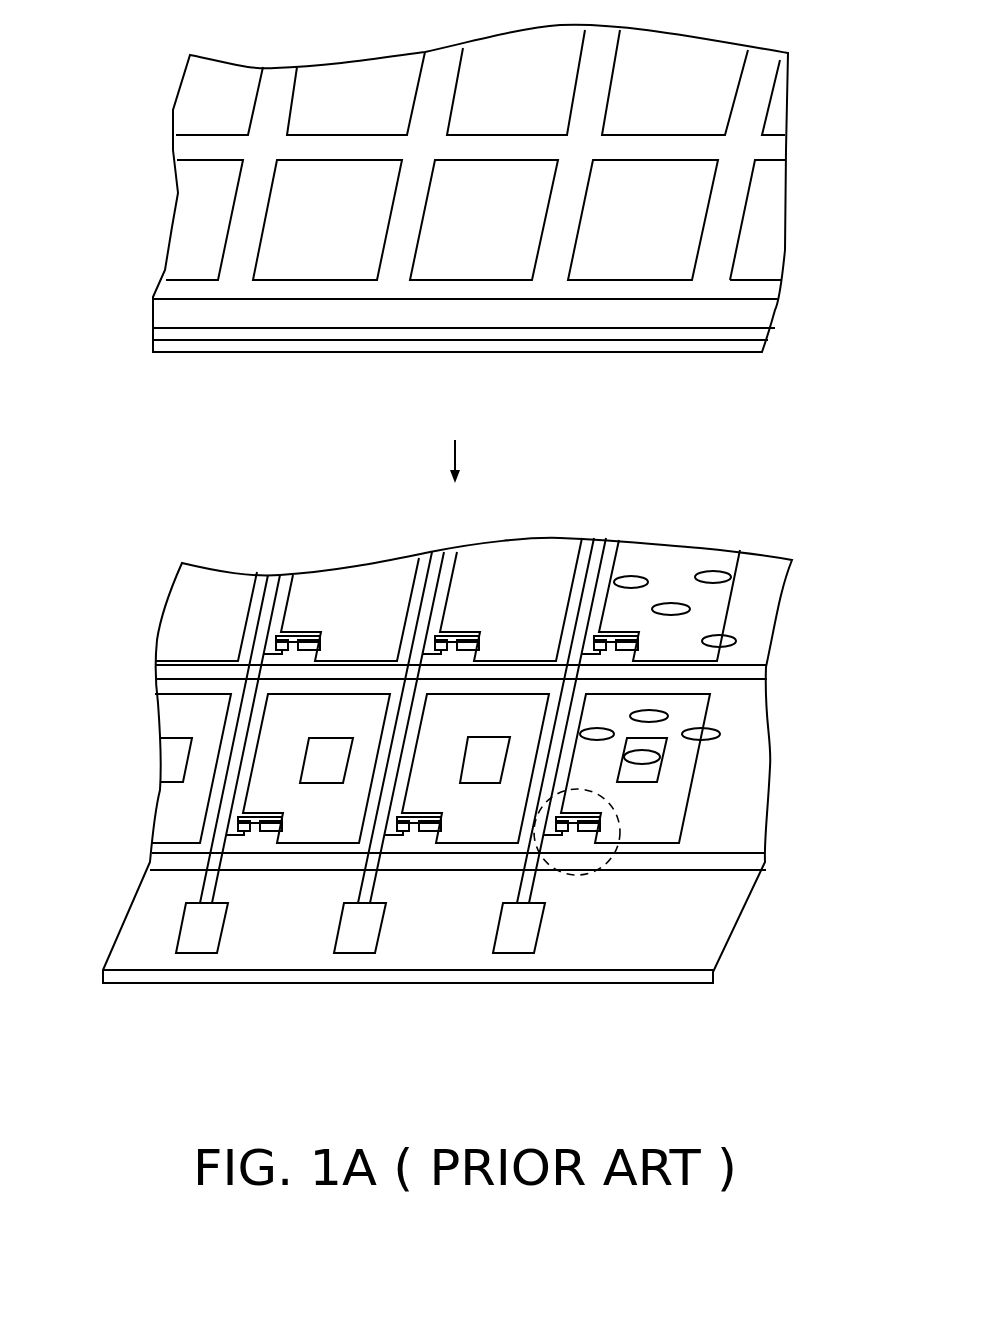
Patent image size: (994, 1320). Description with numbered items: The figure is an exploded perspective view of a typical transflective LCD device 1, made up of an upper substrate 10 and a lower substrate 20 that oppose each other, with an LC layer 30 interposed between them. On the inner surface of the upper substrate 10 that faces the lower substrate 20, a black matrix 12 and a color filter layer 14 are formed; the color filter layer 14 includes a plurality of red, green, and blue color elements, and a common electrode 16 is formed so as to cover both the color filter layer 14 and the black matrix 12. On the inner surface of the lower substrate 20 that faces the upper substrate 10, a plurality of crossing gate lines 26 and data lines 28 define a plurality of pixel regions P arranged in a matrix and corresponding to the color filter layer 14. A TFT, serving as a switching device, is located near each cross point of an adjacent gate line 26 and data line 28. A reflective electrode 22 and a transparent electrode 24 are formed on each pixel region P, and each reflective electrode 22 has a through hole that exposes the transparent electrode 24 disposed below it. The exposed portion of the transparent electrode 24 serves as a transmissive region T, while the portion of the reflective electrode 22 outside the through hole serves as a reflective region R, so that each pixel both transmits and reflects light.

The transflective LCD device 1 is at (500, 814).
The upper substrate 10 is at (718, 313).
The black matrix 12 is at (177, 333).
The color filter layer 14 is at (690, 208).
The common electrode 16 is at (718, 347).
The lower substrate 20 is at (718, 977).
The reflective electrode 22 is at (708, 770).
The transparent electrode 24 is at (670, 730).
The gate line 26 is at (723, 863).
The data line 28 is at (548, 882).
The LC layer 30 is at (703, 633).
The transmissive region T is at (667, 752).
The pixel region P is at (515, 770).
The reflective region R is at (682, 830).
The thin film transistor TFT is at (583, 877).